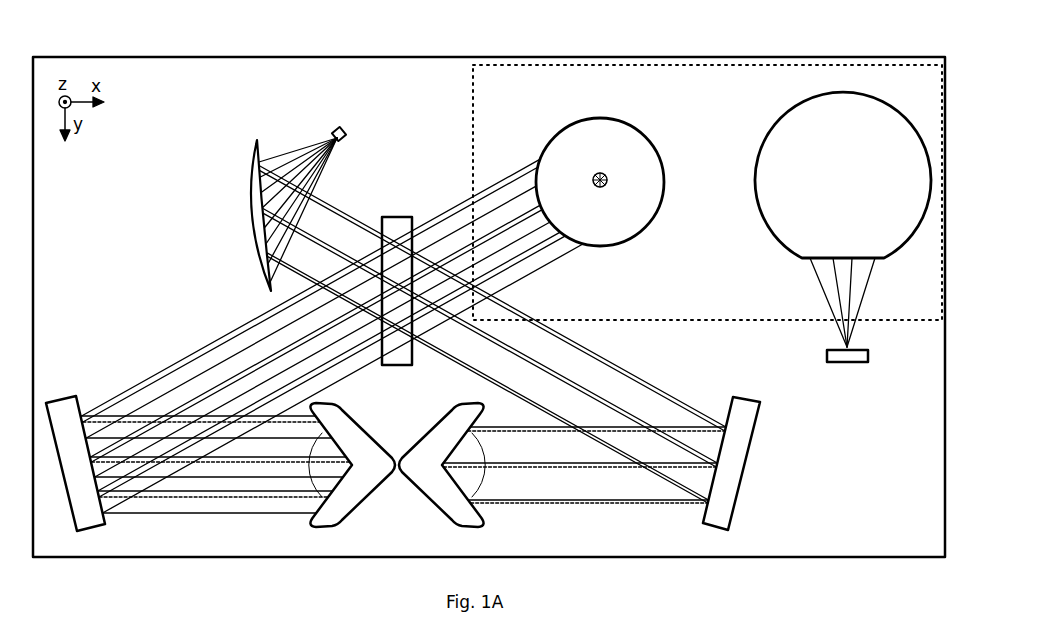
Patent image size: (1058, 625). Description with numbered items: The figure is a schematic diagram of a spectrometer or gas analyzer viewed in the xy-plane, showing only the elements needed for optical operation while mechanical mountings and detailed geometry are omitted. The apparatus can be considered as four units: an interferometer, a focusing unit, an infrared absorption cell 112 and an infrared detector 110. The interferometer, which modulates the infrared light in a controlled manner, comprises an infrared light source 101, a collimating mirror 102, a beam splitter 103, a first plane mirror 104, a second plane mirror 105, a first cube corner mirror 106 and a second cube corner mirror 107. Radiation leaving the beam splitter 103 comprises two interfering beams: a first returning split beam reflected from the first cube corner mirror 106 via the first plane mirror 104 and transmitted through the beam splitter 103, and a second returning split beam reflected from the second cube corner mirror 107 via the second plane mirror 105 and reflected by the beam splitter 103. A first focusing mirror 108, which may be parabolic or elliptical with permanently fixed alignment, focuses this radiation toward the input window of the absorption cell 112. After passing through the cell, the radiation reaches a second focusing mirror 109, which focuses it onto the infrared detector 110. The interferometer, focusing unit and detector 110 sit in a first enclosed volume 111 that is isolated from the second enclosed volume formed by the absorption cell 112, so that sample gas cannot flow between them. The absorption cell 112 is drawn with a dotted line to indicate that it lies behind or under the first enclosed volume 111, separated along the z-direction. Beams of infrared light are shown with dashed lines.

The infrared light source 101 is at (346, 134).
The collimating mirror 102 is at (256, 139).
The beam splitter 103 is at (403, 217).
The first plane mirror 104 is at (71, 398).
The second plane mirror 105 is at (745, 398).
The first cube corner mirror 106 is at (344, 417).
The second cube corner mirror 107 is at (445, 417).
The first focusing mirror 108 is at (600, 118).
The second focusing mirror 109 is at (844, 92).
The infrared detector 110 is at (851, 363).
The first enclosed volume 111 is at (340, 57).
The infrared absorption cell 112 is at (471, 118).